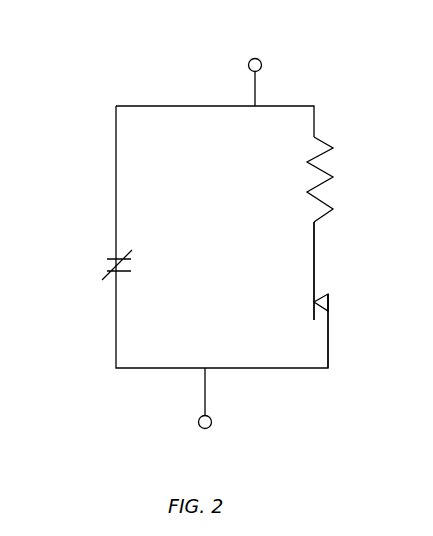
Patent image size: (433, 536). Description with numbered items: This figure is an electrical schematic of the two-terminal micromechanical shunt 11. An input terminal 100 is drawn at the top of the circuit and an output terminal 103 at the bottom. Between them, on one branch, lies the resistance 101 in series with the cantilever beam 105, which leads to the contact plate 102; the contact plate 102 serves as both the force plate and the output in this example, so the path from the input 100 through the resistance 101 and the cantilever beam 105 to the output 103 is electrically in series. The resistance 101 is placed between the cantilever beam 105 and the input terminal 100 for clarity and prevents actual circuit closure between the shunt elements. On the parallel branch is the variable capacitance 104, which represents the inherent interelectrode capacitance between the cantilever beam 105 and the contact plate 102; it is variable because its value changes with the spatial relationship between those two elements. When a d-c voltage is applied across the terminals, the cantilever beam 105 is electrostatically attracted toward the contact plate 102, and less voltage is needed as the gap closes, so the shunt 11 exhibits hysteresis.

The micromechanical shunt 11 is at (70, 106).
The input terminal 100 is at (268, 26).
The resistance 101 is at (339, 131).
The contact plate 102 is at (321, 294).
The output terminal 103 is at (206, 427).
The variable capacitance 104 is at (97, 249).
The cantilever beam 105 is at (305, 255).